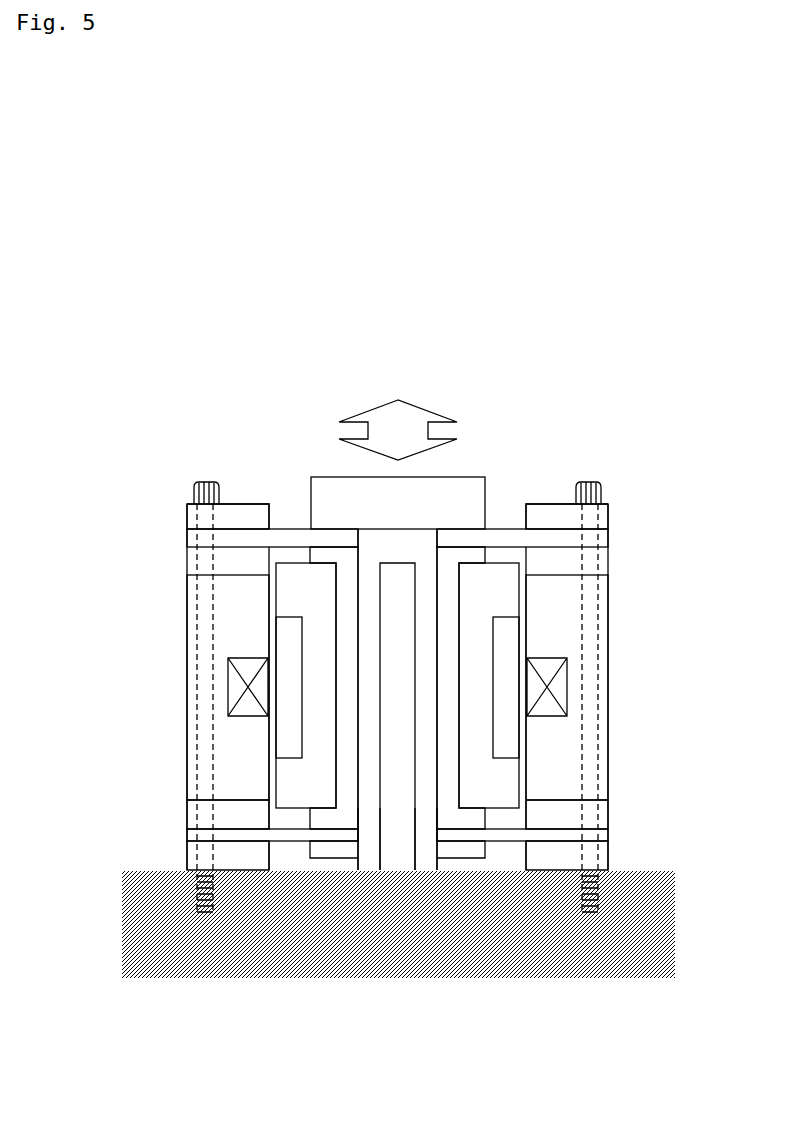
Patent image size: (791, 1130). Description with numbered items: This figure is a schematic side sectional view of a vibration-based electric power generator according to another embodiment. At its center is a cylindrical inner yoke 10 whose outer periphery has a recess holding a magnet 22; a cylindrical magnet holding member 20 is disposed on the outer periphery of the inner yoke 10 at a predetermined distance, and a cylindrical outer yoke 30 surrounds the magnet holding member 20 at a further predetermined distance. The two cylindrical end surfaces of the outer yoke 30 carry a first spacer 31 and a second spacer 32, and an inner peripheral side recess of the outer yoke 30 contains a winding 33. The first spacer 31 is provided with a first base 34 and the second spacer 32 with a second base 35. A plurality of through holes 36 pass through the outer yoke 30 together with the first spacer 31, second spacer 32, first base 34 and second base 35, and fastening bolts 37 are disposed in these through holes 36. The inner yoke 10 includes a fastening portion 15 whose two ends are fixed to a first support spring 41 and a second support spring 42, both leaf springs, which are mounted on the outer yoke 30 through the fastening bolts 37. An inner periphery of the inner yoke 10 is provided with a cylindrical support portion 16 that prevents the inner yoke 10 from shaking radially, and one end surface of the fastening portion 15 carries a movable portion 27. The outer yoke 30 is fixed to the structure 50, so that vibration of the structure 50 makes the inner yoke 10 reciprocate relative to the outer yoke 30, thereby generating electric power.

The inner yoke 10 is at (363, 608).
The fastening portion 15 is at (463, 818).
The cylindrical support portion 16 is at (422, 848).
The magnet holding member 20 is at (323, 588).
The magnet 22 is at (505, 621).
The movable portion 27 is at (437, 485).
The outer yoke 30 is at (172, 618).
The first spacer 31 is at (198, 812).
The second spacer 32 is at (187, 572).
The winding 33 is at (250, 663).
The first base 34 is at (200, 852).
The second base 35 is at (187, 515).
The through holes 36 is at (207, 683).
The fastening bolts 37 is at (195, 495).
The first support spring 41 is at (200, 837).
The second support spring 42 is at (200, 538).
The structure 50 is at (515, 932).